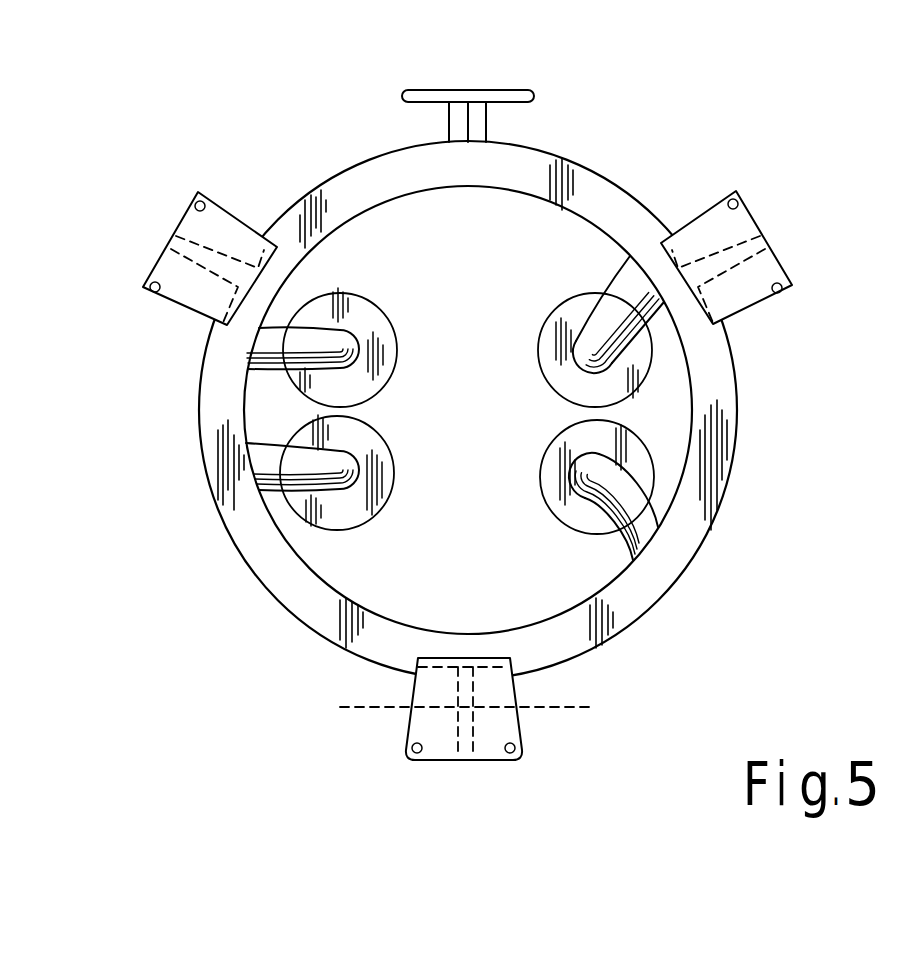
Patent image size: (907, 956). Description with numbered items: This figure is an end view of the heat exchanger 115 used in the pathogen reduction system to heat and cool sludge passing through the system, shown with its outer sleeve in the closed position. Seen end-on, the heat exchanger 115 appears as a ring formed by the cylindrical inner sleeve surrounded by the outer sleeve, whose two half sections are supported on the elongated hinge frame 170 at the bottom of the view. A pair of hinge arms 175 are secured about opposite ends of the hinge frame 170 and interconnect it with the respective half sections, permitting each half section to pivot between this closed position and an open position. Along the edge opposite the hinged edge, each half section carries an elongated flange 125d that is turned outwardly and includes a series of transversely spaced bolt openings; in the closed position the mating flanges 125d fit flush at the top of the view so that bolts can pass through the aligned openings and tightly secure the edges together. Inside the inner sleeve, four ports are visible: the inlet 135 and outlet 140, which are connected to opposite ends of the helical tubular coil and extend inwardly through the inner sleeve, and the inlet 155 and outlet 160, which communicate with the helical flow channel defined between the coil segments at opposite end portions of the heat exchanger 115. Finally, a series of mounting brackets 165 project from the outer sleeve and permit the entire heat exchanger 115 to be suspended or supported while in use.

The heat exchanger 115 is at (721, 112).
The elongated flange 125d is at (486, 123).
The inlet 135 is at (352, 460).
The outlet 140 is at (579, 342).
The inlet 155 is at (344, 342).
The outlet 160 is at (585, 476).
The mounting brackets 165 is at (566, 822).
The hinge frame 170 is at (443, 761).
The hinge arms 175 is at (463, 708).